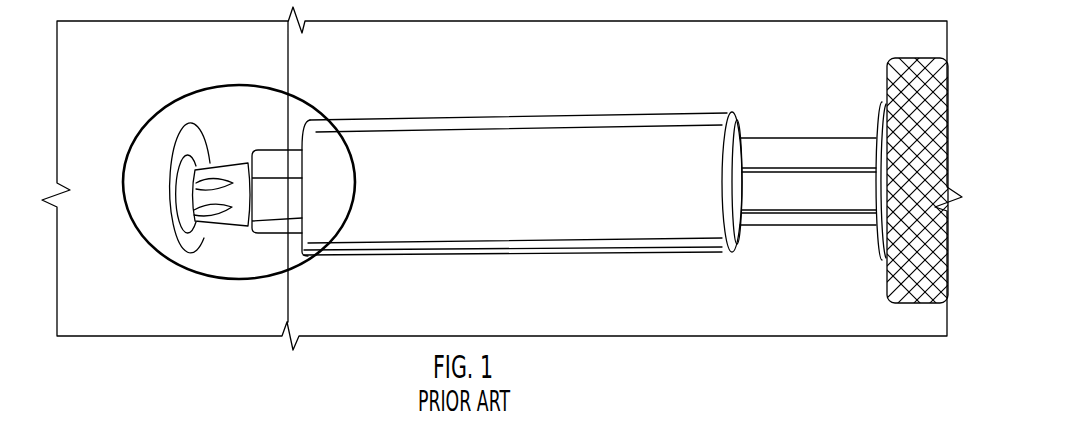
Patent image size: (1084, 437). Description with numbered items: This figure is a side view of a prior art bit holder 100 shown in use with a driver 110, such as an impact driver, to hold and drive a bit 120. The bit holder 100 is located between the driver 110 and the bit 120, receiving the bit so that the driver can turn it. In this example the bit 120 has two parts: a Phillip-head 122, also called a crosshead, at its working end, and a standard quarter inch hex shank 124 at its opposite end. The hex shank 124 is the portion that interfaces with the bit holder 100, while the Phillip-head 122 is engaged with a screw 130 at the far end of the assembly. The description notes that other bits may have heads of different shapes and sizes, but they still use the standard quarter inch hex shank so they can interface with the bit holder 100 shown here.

The bit holder 100 is at (578, 242).
The driver 110 is at (902, 271).
The bit 120 is at (217, 124).
The Phillip-head 122 is at (228, 213).
The hex shank 124 is at (274, 222).
The screw 130 is at (177, 239).